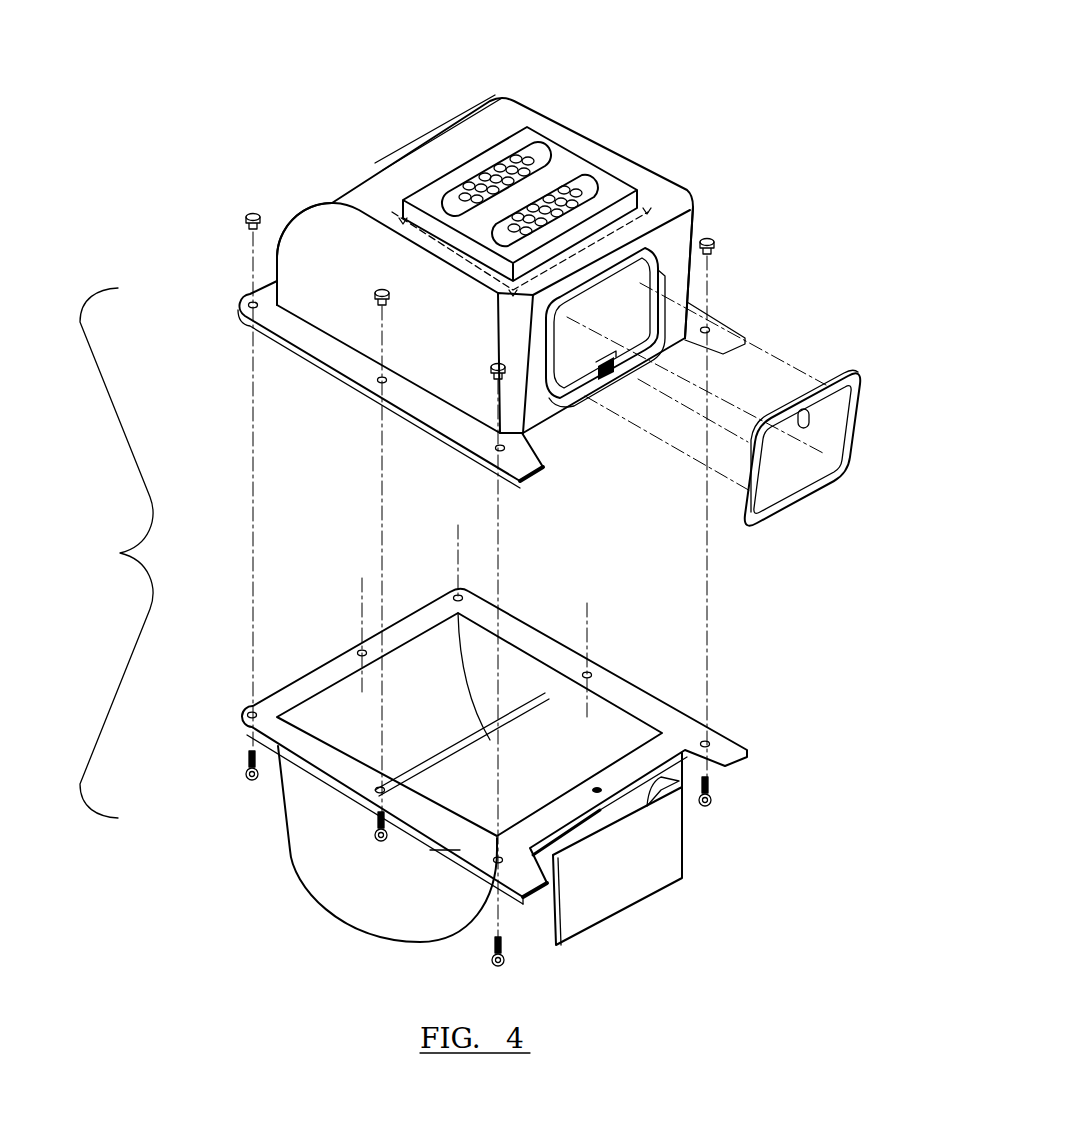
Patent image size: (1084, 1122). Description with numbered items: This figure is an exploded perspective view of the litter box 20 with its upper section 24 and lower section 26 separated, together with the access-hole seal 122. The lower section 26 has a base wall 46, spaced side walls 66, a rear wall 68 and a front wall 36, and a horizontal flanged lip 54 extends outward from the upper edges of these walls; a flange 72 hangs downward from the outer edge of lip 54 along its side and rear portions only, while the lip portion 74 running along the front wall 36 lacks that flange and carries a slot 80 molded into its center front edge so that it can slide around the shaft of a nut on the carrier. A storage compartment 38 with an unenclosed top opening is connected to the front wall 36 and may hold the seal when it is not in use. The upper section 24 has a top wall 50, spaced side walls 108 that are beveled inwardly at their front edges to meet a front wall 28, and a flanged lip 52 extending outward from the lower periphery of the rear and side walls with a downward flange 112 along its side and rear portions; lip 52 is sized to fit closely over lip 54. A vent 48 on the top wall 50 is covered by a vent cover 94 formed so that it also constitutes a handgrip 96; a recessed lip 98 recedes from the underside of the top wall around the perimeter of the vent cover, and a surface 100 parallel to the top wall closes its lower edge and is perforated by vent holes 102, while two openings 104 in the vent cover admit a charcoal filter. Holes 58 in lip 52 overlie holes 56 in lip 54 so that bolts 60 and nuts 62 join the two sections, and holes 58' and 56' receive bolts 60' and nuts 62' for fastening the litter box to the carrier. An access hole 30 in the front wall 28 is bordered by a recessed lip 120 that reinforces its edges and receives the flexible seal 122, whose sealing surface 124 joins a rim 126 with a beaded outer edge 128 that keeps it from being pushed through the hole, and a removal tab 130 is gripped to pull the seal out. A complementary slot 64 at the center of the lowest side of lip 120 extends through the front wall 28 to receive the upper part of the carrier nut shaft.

The litter box 20 is at (393, 584).
The upper section 24 is at (281, 234).
The lower section 26 is at (291, 851).
The front wall 28 is at (675, 230).
The access hole 30 is at (627, 277).
The front wall 36 is at (513, 902).
The compartment 38 is at (686, 880).
The base wall 46 is at (482, 758).
The vent 48 is at (610, 167).
The top wall 50 is at (553, 127).
The flanged lip 52 is at (303, 338).
The flanged lip 54 is at (423, 820).
The holes 56 is at (208, 750).
The holes 56' is at (573, 729).
The holes 58 is at (217, 343).
The holes 58' is at (587, 394).
The bolts 60 is at (332, 858).
The bolts 60' is at (757, 820).
The nuts 62 is at (318, 265).
The nuts 62' is at (745, 213).
The slot 64 is at (610, 377).
The side walls 66 is at (600, 737).
The rear wall 68 is at (345, 710).
The flange 72 is at (447, 850).
The lip portion 74 is at (680, 817).
The slot 80 is at (603, 797).
The vent cover 94 is at (430, 205).
The handgrip 96 is at (470, 177).
The recessed lip 98 is at (557, 157).
The surface 100 is at (430, 168).
The vent holes 102 is at (480, 160).
The openings 104 is at (380, 350).
The side walls 108 is at (330, 238).
The flange 112 is at (413, 420).
The recessed lip 120 is at (660, 292).
The seal 122 is at (747, 520).
The sealing surface 124 is at (840, 403).
The rim 126 is at (783, 507).
The beaded outer edge 128 is at (818, 492).
The removal tab 130 is at (810, 418).